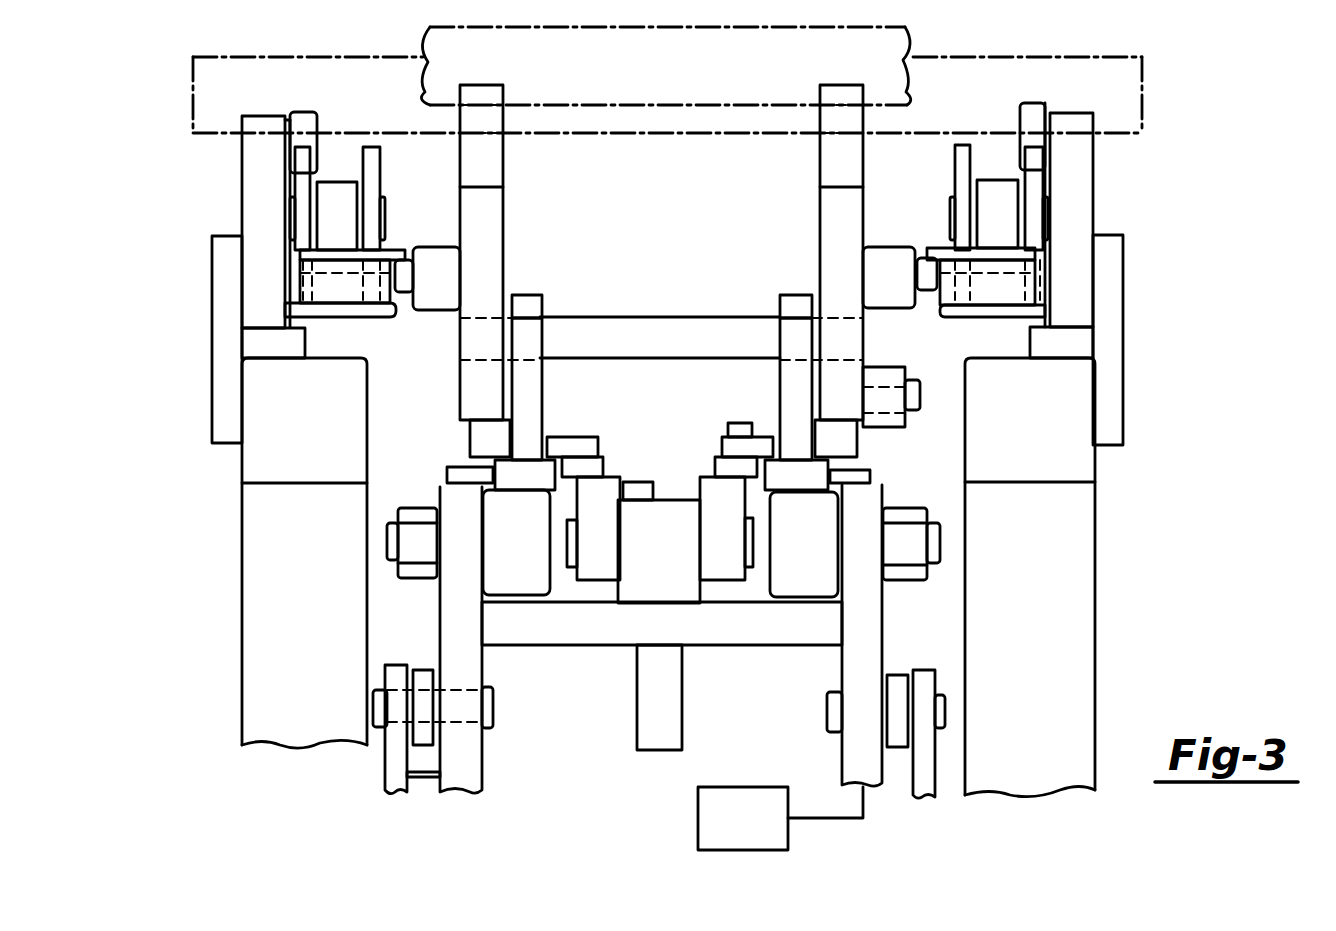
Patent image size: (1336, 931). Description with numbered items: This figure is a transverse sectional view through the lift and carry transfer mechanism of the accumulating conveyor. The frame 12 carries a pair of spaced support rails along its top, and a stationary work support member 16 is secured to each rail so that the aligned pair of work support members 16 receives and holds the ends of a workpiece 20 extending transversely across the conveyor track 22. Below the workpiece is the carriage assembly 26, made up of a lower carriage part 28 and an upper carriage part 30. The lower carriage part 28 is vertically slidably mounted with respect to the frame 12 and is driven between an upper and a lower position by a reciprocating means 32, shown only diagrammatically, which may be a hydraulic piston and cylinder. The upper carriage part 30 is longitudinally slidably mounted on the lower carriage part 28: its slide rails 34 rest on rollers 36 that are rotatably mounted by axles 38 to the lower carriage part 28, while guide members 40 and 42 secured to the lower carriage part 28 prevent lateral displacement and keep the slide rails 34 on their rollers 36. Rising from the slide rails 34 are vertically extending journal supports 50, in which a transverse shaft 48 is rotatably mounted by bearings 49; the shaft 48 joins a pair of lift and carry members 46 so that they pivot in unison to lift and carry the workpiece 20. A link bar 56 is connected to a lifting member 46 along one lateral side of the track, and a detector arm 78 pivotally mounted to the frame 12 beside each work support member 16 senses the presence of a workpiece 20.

The frame 12 is at (1100, 672).
The work support member 16 is at (250, 159).
The workpiece 20 is at (1120, 65).
The conveyor track 22 is at (677, 176).
The carriage assembly 26 is at (617, 660).
The lower carriage part 28 is at (820, 637).
The upper carriage part 30 is at (780, 385).
The reciprocating means 32 is at (718, 787).
The slide rail 34 is at (515, 470).
The roller 36 is at (532, 552).
The axle 38 is at (392, 535).
The guide member 40 is at (587, 437).
The guide member 42 is at (455, 470).
The lift and carry member 46 is at (505, 260).
The shaft 48 is at (640, 320).
The bearing 49 is at (540, 305).
The journal support 50 is at (545, 395).
The link bar 56 is at (875, 362).
The detector arm 78 is at (373, 175).